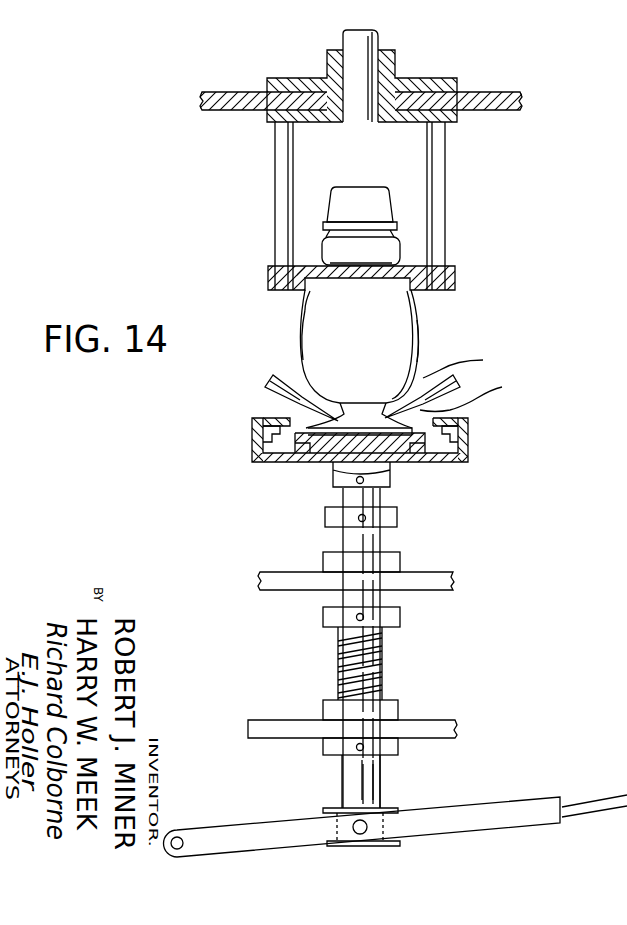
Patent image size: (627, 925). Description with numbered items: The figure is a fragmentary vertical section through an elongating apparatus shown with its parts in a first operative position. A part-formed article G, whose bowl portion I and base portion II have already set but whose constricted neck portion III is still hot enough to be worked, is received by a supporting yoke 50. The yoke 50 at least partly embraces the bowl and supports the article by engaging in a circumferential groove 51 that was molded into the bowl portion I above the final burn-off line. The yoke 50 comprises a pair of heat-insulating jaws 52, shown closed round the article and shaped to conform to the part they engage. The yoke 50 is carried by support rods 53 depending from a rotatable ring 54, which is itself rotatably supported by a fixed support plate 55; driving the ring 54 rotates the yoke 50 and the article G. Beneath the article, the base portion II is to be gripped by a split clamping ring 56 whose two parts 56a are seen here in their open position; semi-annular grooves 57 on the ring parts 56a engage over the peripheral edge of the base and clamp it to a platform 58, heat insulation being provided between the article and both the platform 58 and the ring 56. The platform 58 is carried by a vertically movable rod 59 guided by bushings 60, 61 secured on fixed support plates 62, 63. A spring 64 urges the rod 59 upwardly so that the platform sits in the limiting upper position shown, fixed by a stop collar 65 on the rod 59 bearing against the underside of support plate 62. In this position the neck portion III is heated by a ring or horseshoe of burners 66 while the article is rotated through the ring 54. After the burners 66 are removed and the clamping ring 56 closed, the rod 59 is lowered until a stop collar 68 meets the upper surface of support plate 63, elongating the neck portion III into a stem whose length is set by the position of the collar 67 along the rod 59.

The supporting yoke 50 is at (373, 160).
The circumferential groove 51 is at (371, 272).
The jaws 52 is at (300, 268).
The support rods 53 is at (277, 165).
The rotatable ring 54 is at (490, 96).
The fixed support plate 55 is at (383, 123).
The split clamping ring 56 is at (375, 459).
The ring parts 56a is at (490, 412).
The semi-annular grooves 57 is at (254, 458).
The platform 58 is at (323, 455).
The vertically movable rod 59 is at (360, 541).
The bushing 60 is at (387, 712).
The bushing 61 is at (388, 563).
The fixed support plate 62 is at (412, 730).
The fixed support plate 63 is at (417, 582).
The spring 64 is at (382, 655).
The stop collar 65 is at (385, 748).
The burners 66 is at (268, 387).
The collar 67 is at (393, 617).
The stop collar 68 is at (393, 517).
The bowl portion I is at (318, 333).
The part-formed article G is at (423, 340).
The base portion II is at (468, 395).
The constricted neck portion III is at (466, 360).